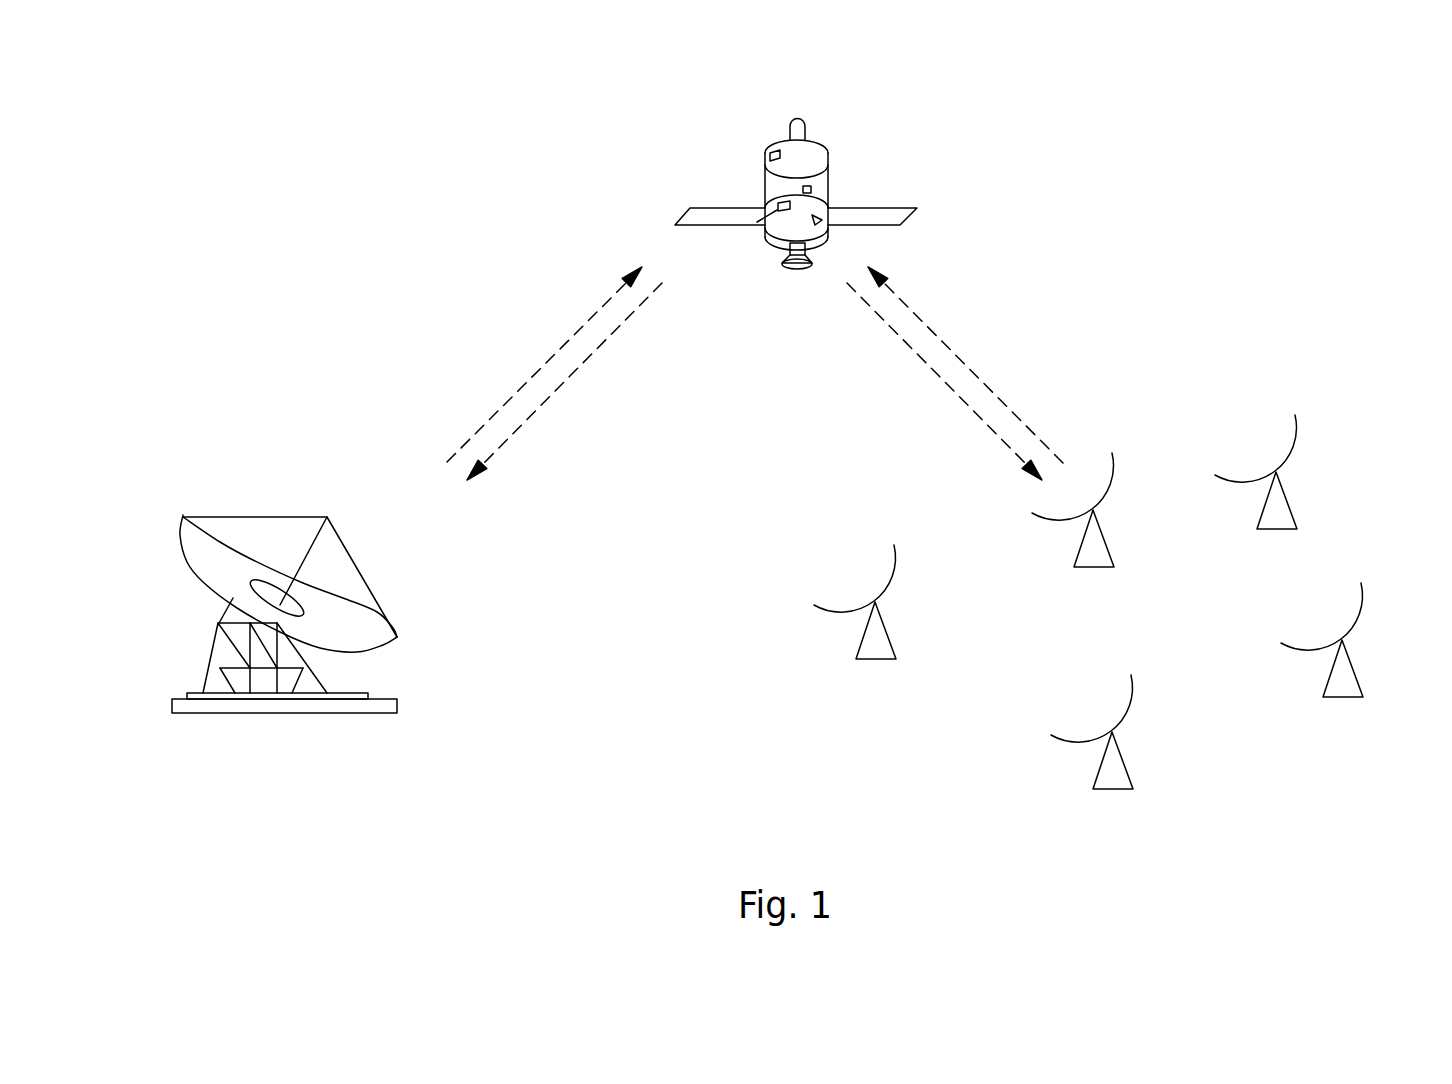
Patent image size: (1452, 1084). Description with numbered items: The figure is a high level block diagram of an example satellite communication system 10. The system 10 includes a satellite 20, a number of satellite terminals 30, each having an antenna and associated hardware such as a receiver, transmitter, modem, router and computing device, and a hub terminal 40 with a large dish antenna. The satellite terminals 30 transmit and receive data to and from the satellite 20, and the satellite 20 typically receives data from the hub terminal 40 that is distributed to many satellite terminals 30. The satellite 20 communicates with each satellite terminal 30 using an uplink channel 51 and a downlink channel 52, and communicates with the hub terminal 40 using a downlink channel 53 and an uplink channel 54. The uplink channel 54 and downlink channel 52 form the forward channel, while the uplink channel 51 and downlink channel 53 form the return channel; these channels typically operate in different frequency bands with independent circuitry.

The satellite communication system 10 is at (591, 122).
The satellite 20 is at (829, 152).
The satellite terminal 30 is at (1104, 545).
The hub terminal 40 is at (387, 699).
The uplink channel 51 is at (965, 365).
The downlink channel 52 is at (947, 378).
The downlink channel 53 is at (565, 382).
The uplink channel 54 is at (547, 365).